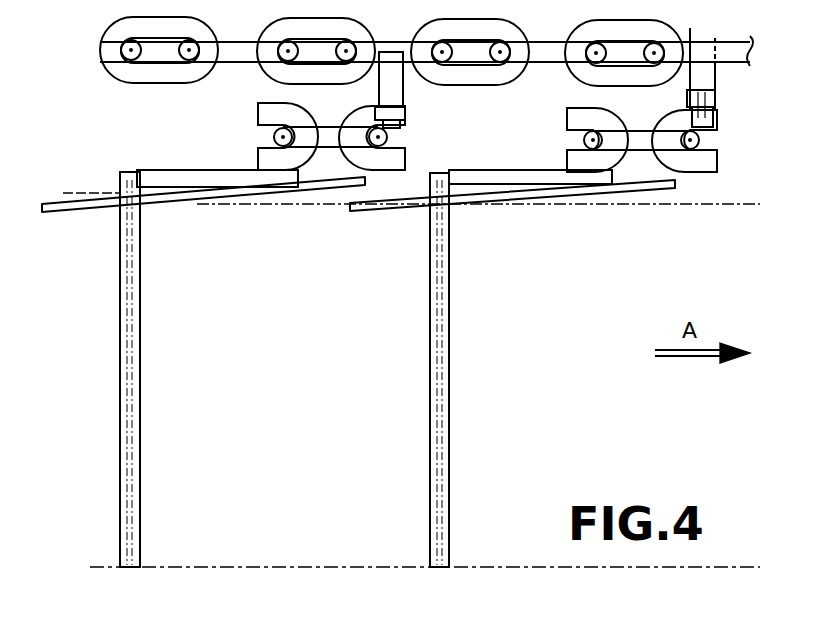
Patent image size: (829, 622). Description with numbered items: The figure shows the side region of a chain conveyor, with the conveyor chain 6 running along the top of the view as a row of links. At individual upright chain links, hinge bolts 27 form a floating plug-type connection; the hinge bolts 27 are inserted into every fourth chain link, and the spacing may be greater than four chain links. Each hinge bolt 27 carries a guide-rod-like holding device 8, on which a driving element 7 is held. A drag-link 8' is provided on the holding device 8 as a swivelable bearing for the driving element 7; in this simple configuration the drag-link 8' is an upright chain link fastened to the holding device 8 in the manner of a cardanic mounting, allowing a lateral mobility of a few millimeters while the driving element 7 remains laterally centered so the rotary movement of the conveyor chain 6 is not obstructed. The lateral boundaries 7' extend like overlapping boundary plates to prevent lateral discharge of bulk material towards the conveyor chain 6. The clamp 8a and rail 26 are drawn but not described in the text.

The conveyor chain 6 is at (243, 61).
The driving element 7 is at (425, 368).
The lateral boundary 7' is at (401, 217).
The holding device 8 is at (606, 140).
The gripper clamp 8a is at (336, 140).
The drag-link 8' is at (630, 114).
The guide rail 26 is at (730, 57).
The hinge bolt 27 is at (705, 78).